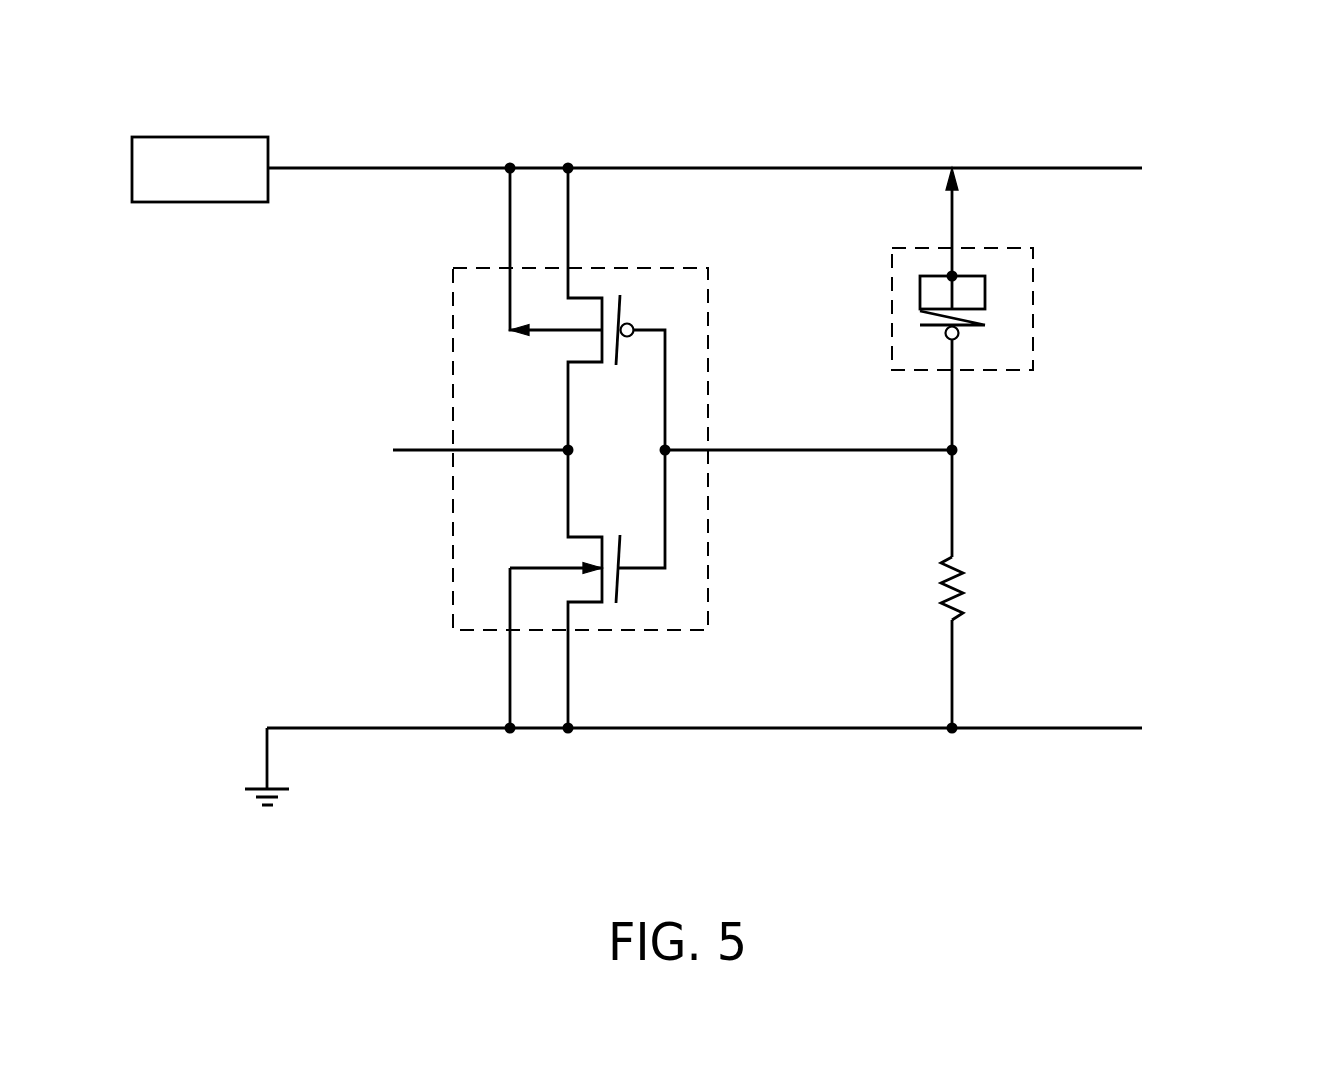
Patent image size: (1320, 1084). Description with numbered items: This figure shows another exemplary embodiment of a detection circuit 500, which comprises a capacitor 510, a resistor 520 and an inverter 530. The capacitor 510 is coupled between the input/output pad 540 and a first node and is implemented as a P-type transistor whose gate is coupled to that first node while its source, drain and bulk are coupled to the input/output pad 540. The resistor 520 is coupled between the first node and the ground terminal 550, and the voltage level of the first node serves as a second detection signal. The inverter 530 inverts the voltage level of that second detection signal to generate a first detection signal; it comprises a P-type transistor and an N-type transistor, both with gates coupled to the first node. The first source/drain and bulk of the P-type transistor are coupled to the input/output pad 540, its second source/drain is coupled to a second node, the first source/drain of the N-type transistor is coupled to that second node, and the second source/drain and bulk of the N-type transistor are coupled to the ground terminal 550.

The detection circuit 500 is at (703, 460).
The capacitor 510 is at (1006, 309).
The resistor 520 is at (965, 588).
The inverter 530 is at (538, 448).
The input/output pad 540 is at (224, 184).
The ground terminal 550 is at (255, 805).